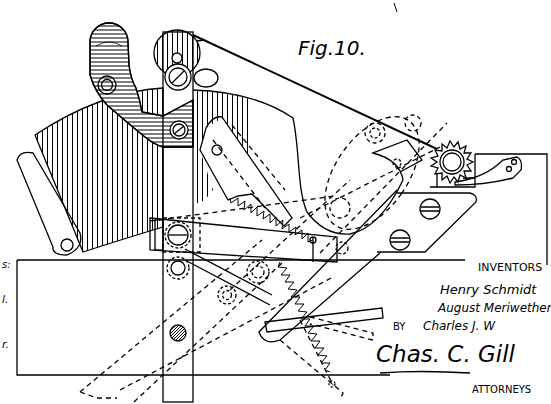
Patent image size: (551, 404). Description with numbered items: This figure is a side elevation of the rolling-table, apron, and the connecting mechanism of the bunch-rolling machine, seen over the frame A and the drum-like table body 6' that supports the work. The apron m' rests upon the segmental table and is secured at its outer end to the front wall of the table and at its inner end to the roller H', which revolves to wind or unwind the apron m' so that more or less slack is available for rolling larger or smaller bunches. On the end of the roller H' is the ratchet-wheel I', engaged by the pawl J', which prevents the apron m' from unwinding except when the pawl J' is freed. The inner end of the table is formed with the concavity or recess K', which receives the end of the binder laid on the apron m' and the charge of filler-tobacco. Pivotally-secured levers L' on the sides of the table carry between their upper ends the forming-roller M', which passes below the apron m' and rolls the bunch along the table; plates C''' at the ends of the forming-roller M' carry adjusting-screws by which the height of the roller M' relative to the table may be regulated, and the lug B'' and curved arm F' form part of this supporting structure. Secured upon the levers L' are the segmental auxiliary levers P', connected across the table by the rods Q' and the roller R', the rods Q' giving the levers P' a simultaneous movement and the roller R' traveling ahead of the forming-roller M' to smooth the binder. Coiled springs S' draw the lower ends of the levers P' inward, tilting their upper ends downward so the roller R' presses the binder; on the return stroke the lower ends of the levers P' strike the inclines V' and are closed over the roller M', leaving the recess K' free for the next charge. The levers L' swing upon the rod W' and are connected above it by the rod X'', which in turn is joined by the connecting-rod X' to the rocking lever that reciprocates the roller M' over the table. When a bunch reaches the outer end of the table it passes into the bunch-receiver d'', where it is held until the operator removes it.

The frame A is at (241, 317).
The drum 6' is at (219, 170).
The concavity or recess K' is at (298, 195).
The curved arm F' is at (128, 85).
The rods Q' is at (119, 37).
The roller R' is at (95, 85).
The bunch-receiver d'' is at (44, 203).
The levers L' is at (178, 217).
The plates C''' is at (177, 49).
The lug B'' is at (206, 78).
The apron m' is at (315, 92).
The forming-roller M' is at (211, 36).
The segmental auxiliary levers P' is at (246, 171).
The coiled springs S' is at (273, 220).
The rod X'' is at (242, 261).
The rod W' is at (163, 329).
The inclines V' is at (367, 266).
The connecting-rod X' is at (324, 317).
The roller H' is at (452, 162).
The ratchet-wheel I' is at (488, 200).
The pawl J' is at (488, 177).